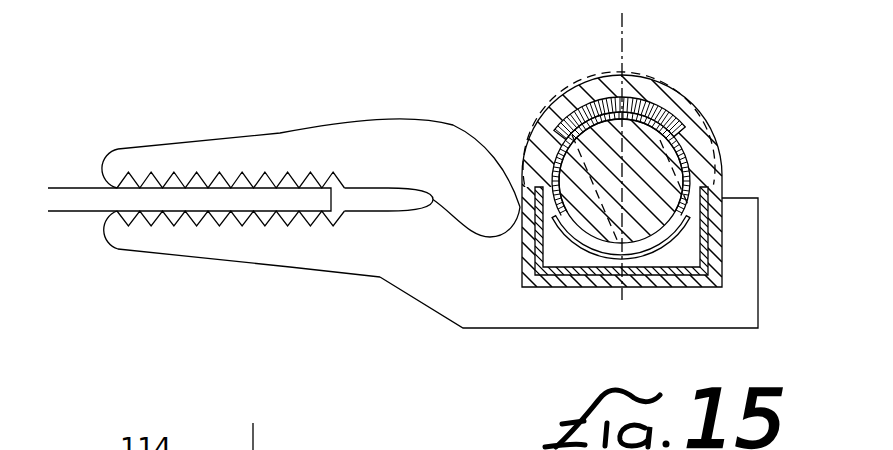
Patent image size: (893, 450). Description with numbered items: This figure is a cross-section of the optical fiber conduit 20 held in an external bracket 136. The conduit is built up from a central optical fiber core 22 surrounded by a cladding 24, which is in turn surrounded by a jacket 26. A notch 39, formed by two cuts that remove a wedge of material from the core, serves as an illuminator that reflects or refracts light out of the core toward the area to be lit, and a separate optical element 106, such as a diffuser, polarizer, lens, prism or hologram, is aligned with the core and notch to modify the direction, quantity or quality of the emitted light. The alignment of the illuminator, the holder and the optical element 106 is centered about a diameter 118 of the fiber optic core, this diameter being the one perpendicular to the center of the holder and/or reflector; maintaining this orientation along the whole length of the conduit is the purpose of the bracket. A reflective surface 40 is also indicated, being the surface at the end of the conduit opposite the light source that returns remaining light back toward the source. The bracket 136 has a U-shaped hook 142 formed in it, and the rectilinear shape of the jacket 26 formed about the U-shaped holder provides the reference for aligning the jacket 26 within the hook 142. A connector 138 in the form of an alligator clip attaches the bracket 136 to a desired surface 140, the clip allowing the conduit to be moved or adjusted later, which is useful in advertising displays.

The optical fiber conduit 20 is at (620, 192).
The optical fiber core 22 is at (577, 121).
The cladding 24 is at (558, 150).
The jacket 26 is at (665, 106).
The notch 39 is at (653, 263).
The reflective surface 40 is at (690, 242).
The optical element 106 is at (655, 111).
The diameter 118 is at (623, 38).
The external bracket 136 is at (757, 280).
The connector 138 is at (220, 238).
The desired surface 140 is at (78, 197).
The U-shaped hook 142 is at (512, 172).